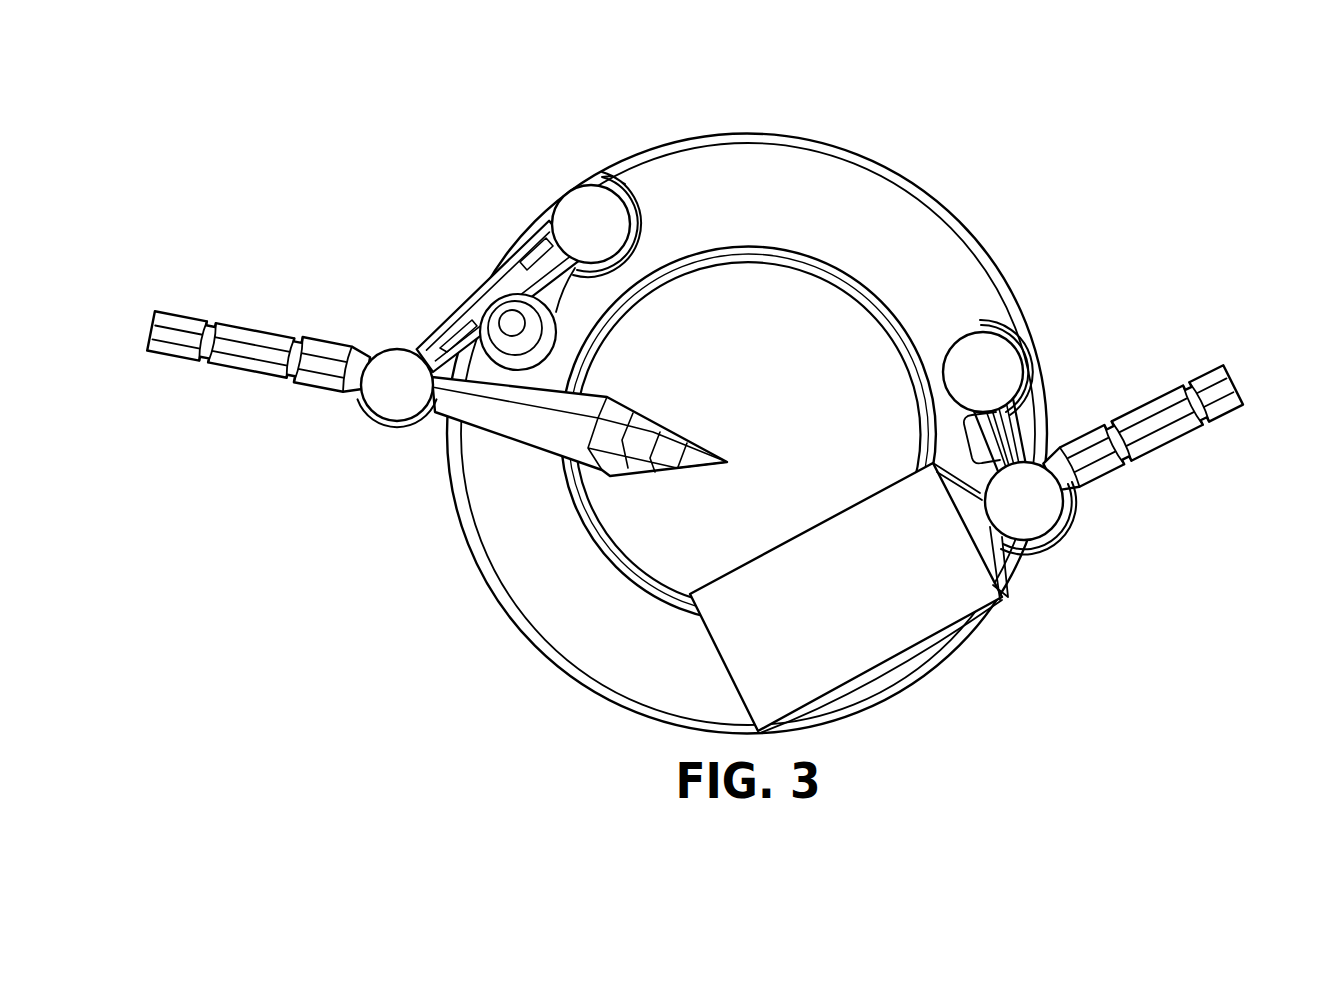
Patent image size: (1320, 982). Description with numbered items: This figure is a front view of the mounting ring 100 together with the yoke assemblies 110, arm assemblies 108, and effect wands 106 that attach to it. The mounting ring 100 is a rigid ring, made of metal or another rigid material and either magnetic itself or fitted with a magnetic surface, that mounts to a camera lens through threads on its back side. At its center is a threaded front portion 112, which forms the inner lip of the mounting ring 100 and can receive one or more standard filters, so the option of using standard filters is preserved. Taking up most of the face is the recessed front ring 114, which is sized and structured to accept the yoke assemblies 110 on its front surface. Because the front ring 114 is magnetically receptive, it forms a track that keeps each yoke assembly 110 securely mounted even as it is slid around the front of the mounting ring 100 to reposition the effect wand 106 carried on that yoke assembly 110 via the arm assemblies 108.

The mounting ring 100 is at (747, 401).
The effect wand 106 is at (234, 375).
The arm assembly 108 is at (441, 340).
The yoke assembly 110 is at (629, 190).
The threaded front portion 112 is at (889, 343).
The recessed front ring 114 is at (730, 213).